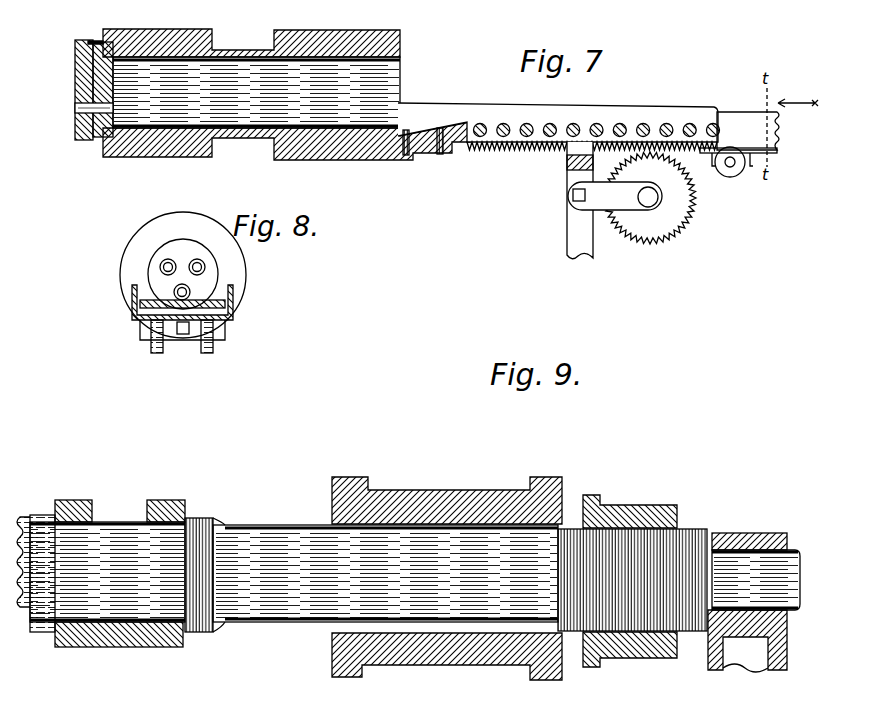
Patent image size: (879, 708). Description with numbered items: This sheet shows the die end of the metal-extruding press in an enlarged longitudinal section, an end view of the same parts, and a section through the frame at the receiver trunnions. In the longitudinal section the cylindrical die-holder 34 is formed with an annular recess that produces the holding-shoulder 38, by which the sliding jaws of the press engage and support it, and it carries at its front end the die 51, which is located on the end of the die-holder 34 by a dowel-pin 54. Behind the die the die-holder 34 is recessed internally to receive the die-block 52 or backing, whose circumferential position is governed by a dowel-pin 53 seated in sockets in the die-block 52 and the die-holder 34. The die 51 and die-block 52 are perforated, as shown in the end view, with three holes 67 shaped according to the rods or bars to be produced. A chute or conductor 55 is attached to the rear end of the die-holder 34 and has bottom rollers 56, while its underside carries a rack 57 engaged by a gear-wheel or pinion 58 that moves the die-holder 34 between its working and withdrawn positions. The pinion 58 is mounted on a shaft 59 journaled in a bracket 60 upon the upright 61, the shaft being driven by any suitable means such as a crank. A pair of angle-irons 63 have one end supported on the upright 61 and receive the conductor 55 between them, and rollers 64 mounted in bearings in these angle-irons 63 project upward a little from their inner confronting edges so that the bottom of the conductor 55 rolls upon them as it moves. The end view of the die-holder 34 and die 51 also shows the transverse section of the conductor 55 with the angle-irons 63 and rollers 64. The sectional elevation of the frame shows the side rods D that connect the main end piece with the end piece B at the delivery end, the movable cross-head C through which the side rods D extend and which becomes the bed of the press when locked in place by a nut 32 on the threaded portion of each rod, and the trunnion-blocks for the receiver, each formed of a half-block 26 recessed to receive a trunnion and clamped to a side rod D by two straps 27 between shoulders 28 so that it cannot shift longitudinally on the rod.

In FIG. 9, the half-block 26 is at (133, 648).
In FIG. 9, the straps 27 is at (70, 500).
In FIG. 9, the shoulders 28 is at (205, 516).
In FIG. 9, the nut 32 is at (648, 505).
In FIG. 7, the die-holder 34 is at (140, 157).
In FIG. 8, the die-holder 34 is at (125, 262).
In FIG. 7, the holding-shoulder 38 is at (220, 40).
In FIG. 7, the die 51 is at (75, 72).
In FIG. 7, the die-block 52 is at (120, 120).
In FIG. 8, the die-block 52 is at (210, 274).
In FIG. 7, the dowel-pin 53 is at (106, 42).
In FIG. 7, the dowel-pin 54 is at (92, 40).
In FIG. 7, the chute or conductor 55 is at (466, 104).
In FIG. 7, the bottom rollers 56 is at (506, 124).
In FIG. 8, the bottom rollers 56 is at (191, 336).
In FIG. 7, the rack 57 is at (512, 152).
In FIG. 8, the rack 57 is at (133, 286).
In FIG. 7, the gear-wheel or pinion 58 is at (650, 198).
In FIG. 7, the shaft 59 is at (663, 197).
In FIG. 7, the bracket 60 is at (615, 196).
In FIG. 7, the upright 61 is at (567, 236).
In FIG. 7, the angle-irons 63 is at (739, 132).
In FIG. 8, the angle-irons 63 is at (133, 322).
In FIG. 7, the rollers 64 is at (736, 177).
In FIG. 8, the rollers 64 is at (151, 350).
In FIG. 7, the holes 67 is at (113, 107).
In FIG. 8, the holes 67 is at (165, 260).
In FIG. 9, the end piece B is at (760, 532).
In FIG. 9, the movable cross-head C is at (447, 582).
In FIG. 9, the side rods D is at (271, 524).